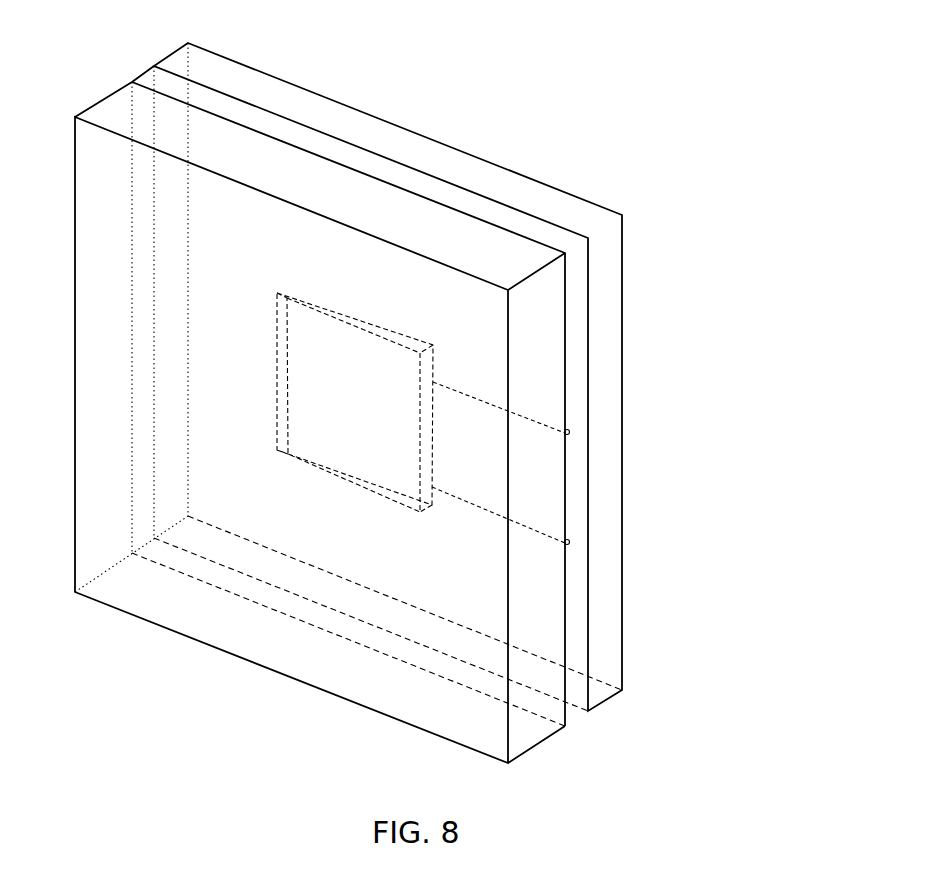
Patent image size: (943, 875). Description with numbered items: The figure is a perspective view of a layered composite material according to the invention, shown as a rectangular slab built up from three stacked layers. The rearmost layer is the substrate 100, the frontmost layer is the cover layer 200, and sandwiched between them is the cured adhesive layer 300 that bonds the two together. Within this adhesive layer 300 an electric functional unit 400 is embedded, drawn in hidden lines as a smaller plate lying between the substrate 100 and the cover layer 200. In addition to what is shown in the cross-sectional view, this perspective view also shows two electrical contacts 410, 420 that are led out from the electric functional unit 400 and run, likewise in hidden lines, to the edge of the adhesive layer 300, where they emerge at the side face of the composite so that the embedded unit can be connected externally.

The substrate 100 is at (603, 266).
The cover layer 200 is at (540, 612).
The cured adhesive layer 300 is at (577, 335).
The electric functional unit 400 is at (398, 460).
The electrical contact 410 is at (580, 430).
The electrical contact 420 is at (580, 540).